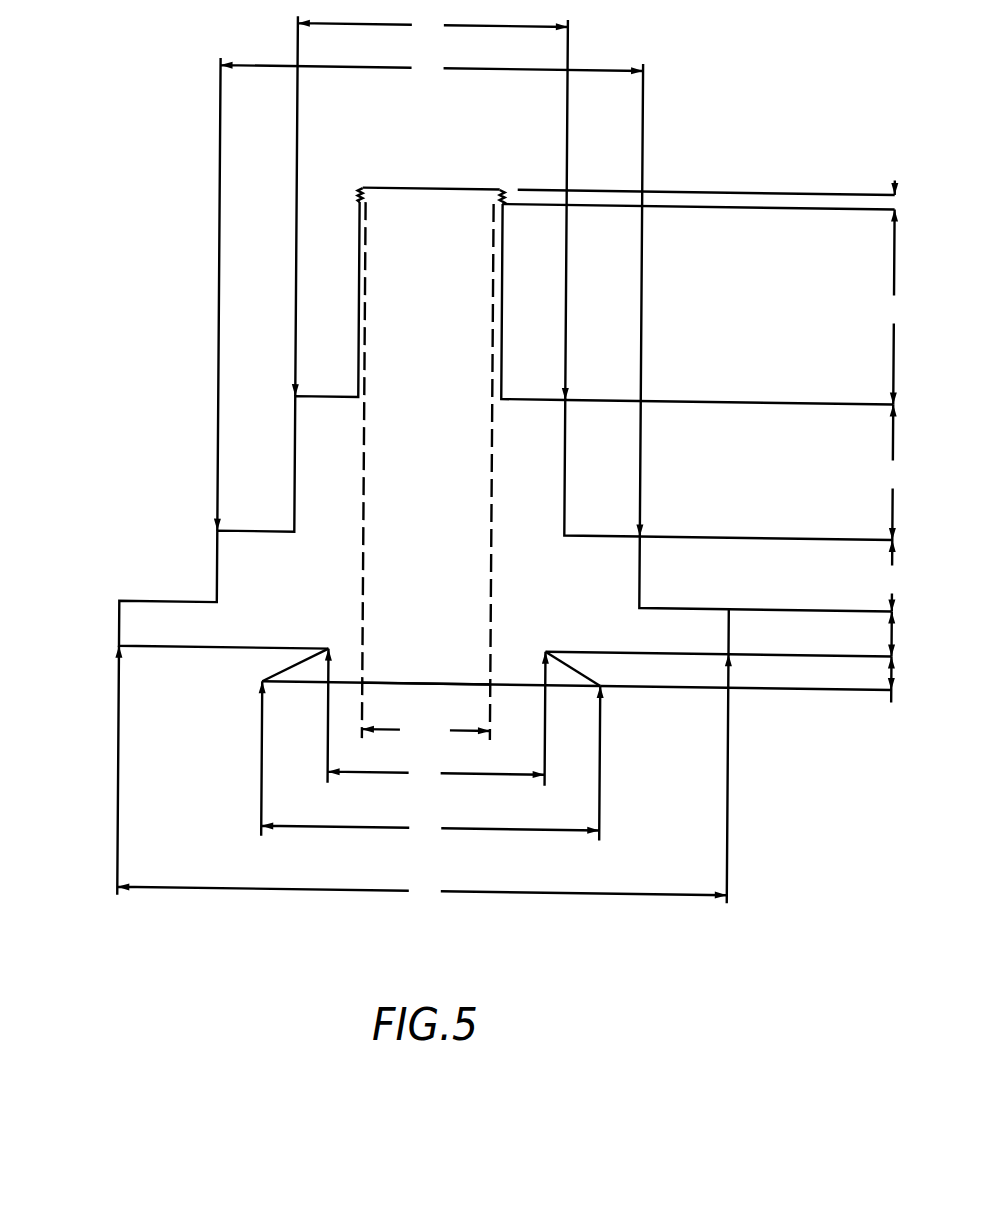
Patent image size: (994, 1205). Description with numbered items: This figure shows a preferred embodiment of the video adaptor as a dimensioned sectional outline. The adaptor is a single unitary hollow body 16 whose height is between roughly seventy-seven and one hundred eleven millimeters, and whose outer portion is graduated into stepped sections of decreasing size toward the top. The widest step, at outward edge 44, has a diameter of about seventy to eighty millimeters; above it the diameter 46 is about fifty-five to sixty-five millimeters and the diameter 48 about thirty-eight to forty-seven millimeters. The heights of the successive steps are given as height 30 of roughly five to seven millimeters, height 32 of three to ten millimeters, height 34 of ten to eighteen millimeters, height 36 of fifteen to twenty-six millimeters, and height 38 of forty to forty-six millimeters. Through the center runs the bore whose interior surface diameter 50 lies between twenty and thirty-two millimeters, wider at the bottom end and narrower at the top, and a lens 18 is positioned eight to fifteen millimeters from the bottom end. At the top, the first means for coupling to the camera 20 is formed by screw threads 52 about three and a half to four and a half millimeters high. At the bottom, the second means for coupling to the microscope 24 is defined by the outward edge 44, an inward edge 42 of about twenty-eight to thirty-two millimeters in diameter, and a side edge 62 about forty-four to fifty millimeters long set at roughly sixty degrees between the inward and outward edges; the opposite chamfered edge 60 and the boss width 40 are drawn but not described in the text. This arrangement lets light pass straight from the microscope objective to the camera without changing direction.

The hollow body portion 16 is at (345, 182).
The lens 18 is at (474, 600).
The first means for coupling the top end to the camera 20 is at (424, 181).
The second means for coupling the bottom end to the microscope 24 is at (487, 678).
The graduated outer portion height 30 is at (747, 675).
The graduated outer portion height 32 is at (811, 632).
The graduated outer portion height 34 is at (818, 575).
The graduated outer portion height 36 is at (773, 470).
The graduated outer portion height 38 is at (703, 304).
The bottom boss width dimension 40 is at (431, 764).
The inward edge 42 is at (436, 721).
The outward edge 44 is at (423, 780).
The graduated outer portion diameter 46 is at (430, 292).
The graduated outer portion diameter 48 is at (432, 203).
The interior surface diameter 50 is at (426, 730).
The screw threads 52 is at (722, 196).
The left chamfer surface 60 is at (270, 674).
The side edge 62 is at (588, 664).